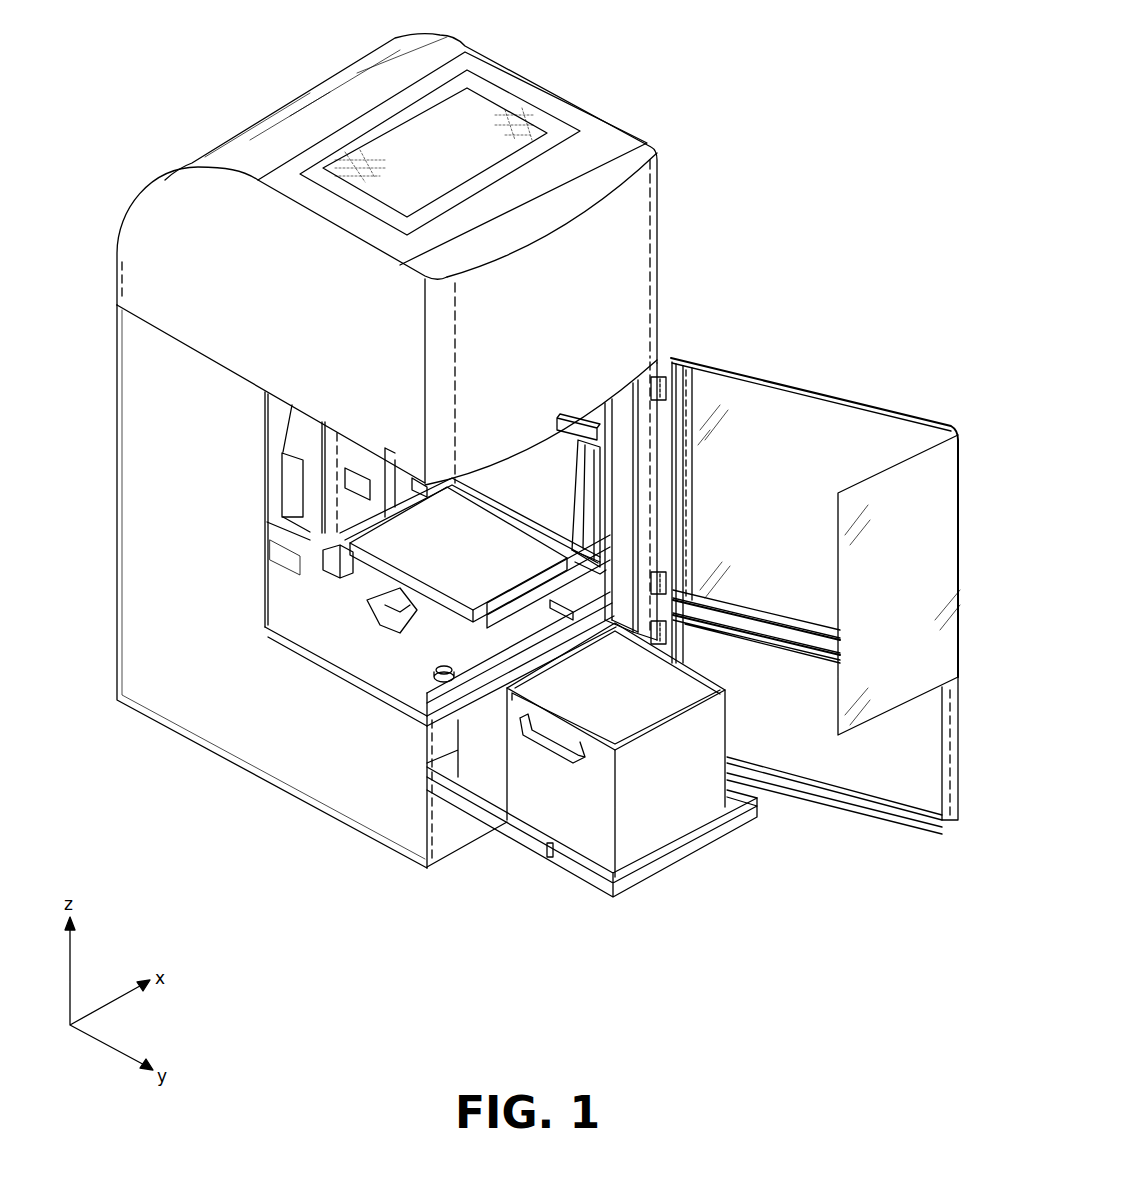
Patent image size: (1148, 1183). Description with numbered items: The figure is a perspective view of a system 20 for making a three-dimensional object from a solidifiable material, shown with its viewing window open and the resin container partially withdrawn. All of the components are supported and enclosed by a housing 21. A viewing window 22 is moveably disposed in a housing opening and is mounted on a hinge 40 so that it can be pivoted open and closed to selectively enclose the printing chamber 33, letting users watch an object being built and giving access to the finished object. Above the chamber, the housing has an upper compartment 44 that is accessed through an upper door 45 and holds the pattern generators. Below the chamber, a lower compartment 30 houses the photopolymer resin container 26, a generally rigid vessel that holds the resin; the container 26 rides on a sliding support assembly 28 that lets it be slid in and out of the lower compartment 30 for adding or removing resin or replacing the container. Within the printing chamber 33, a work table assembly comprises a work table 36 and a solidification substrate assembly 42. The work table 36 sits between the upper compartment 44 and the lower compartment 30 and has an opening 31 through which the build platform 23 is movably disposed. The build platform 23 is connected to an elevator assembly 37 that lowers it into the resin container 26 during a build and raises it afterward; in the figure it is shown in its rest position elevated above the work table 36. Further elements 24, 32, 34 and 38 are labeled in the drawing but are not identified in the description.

The system 20 is at (750, 63).
The housing 21 is at (660, 250).
The viewing window 22 is at (786, 510).
The build platform 23 is at (463, 562).
The lower rail 24 is at (802, 757).
The photopolymer resin container 26 is at (673, 830).
The sliding support assembly 28 is at (483, 815).
The lower compartment 30 is at (445, 833).
The opening 31 is at (353, 572).
The lower frame member 32 is at (457, 637).
The printing chamber 33 is at (285, 557).
The chamber wall 34 is at (330, 635).
The work table 36 is at (394, 657).
The elevator assembly 37 is at (372, 517).
The actuator assembly 38 is at (370, 590).
The hinge 40 is at (657, 363).
The solidification substrate assembly 42 is at (549, 490).
The upper compartment 44 is at (563, 334).
The upper door 45 is at (633, 317).